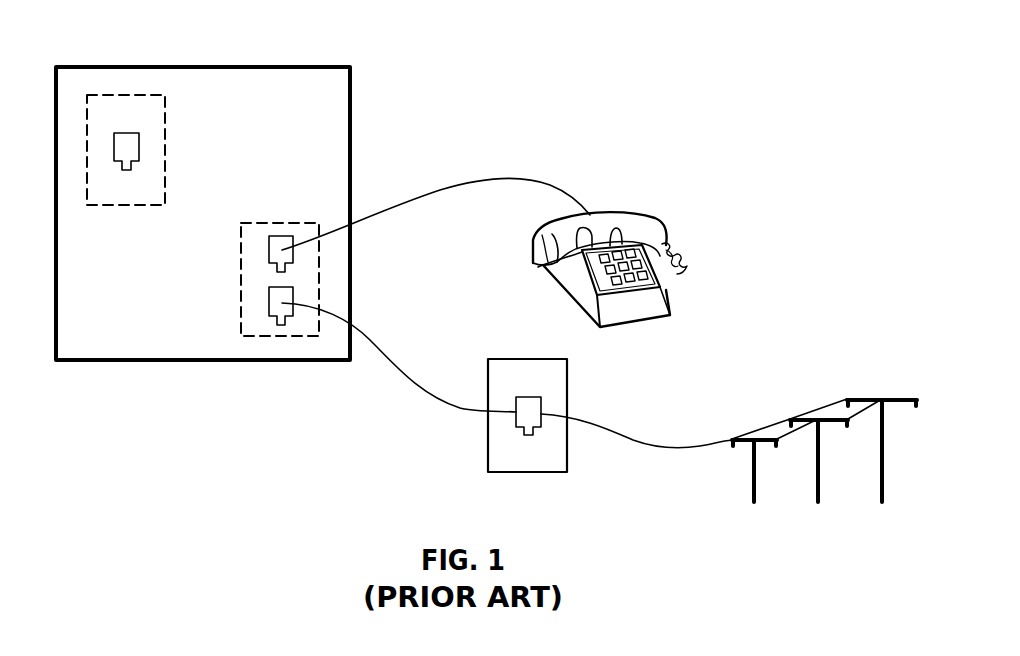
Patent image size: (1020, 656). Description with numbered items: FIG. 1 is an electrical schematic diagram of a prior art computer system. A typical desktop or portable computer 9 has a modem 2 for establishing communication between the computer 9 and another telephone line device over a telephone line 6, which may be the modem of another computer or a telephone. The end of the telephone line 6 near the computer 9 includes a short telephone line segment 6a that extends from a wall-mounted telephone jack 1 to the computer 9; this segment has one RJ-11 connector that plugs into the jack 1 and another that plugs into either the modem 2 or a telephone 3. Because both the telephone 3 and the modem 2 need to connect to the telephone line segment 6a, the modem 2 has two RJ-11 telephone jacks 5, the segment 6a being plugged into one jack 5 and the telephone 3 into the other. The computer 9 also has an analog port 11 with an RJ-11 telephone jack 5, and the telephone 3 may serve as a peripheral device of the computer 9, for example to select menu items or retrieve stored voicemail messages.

The wall-mounted telephone jack 1 is at (552, 409).
The modem 2 is at (279, 242).
The telephone 3 is at (610, 235).
The RJ-11 telephone jack 5 is at (203, 209).
The telephone line 6 is at (636, 408).
The telephone line segment 6a is at (399, 352).
The computer 9 is at (203, 180).
The analog port 11 is at (100, 113).